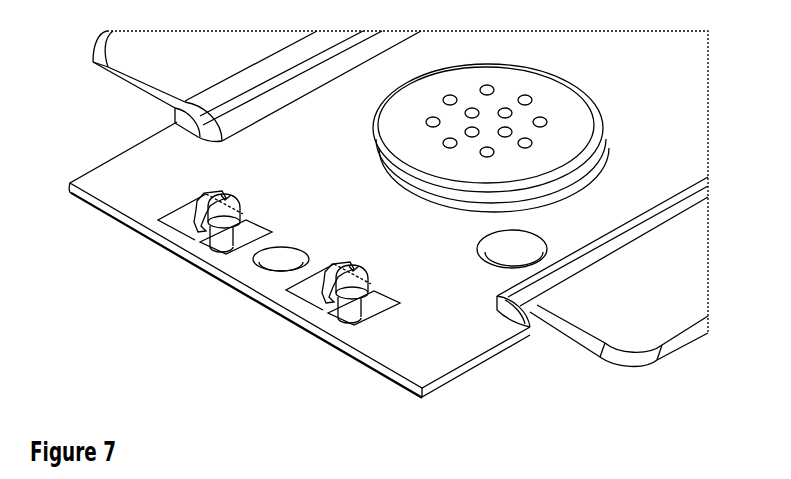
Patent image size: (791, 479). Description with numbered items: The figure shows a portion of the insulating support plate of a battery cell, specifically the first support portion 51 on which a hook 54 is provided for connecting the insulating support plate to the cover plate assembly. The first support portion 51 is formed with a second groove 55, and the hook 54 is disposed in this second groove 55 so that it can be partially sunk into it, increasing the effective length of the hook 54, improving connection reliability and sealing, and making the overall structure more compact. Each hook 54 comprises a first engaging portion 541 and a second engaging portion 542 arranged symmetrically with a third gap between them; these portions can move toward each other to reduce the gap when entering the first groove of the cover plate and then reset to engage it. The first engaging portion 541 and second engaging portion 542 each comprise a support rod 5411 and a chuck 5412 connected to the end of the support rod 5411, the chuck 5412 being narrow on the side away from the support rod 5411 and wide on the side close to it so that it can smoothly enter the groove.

The first support portion 51 is at (123, 192).
The hook 54 is at (325, 247).
The first engaging portion 541 is at (212, 192).
The second engaging portion 542 is at (226, 194).
The support rod 5411 is at (262, 228).
The chuck 5412 is at (242, 206).
The second groove 55 is at (318, 300).